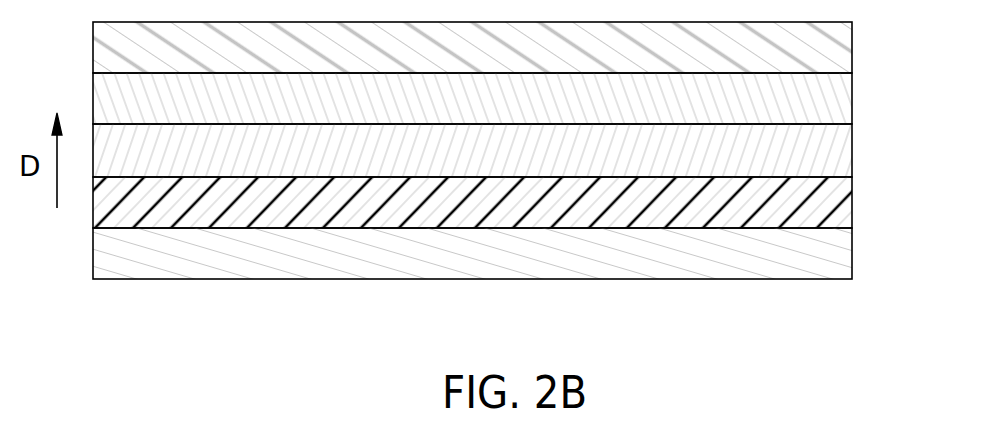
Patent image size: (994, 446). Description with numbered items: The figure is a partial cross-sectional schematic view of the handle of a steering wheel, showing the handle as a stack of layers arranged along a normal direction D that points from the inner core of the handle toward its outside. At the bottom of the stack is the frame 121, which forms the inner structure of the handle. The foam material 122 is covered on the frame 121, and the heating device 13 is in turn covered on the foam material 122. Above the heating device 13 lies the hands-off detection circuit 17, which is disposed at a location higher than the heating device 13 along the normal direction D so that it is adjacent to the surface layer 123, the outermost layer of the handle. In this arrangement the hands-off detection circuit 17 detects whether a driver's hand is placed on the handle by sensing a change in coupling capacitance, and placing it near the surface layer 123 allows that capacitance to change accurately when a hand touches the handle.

The frame 121 is at (830, 255).
The foam material 122 is at (832, 207).
The surface layer 123 is at (830, 40).
The heating device 13 is at (830, 150).
The hands-off detection circuit 17 is at (830, 97).